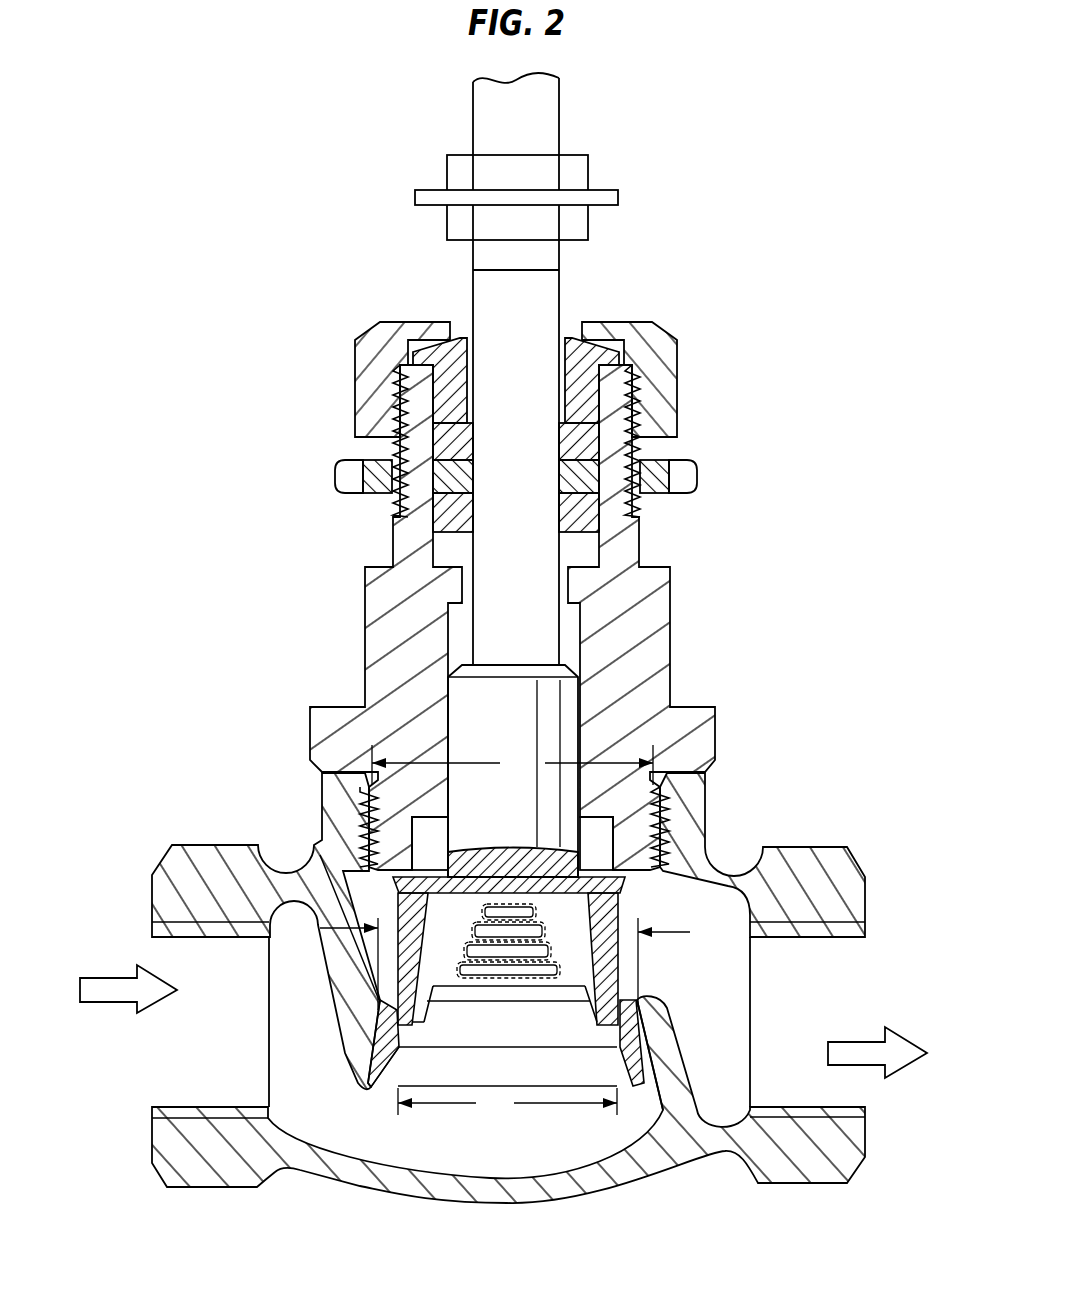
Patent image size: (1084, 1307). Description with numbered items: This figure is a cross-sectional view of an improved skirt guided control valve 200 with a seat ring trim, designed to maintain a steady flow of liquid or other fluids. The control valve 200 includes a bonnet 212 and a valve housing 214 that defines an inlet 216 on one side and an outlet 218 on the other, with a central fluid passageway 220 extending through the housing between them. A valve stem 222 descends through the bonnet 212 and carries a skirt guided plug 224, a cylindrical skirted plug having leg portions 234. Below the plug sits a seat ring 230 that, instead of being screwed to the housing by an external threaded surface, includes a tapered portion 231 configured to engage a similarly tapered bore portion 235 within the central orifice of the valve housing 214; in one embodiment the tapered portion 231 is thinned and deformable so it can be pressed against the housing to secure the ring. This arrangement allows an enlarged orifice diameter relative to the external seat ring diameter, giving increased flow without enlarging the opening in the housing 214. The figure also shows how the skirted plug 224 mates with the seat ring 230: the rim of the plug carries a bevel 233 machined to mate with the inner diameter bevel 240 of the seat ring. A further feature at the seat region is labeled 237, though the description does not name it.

The skirt guided control valve 200 is at (262, 475).
The bonnet 212 is at (697, 720).
The valve housing 214 is at (687, 803).
The inlet 216 is at (195, 1050).
The outlet 218 is at (815, 972).
The central fluid passageway 220 is at (735, 1021).
The valve stem 222 is at (523, 553).
The skirt guided plug 224 is at (443, 928).
The seat ring 230 is at (388, 1015).
The tapered portion 231 is at (388, 1082).
The bevel 233 is at (620, 886).
The leg portions 234 is at (600, 1002).
The tapered bore portion 235 is at (367, 1072).
The body seat surface 237 is at (638, 1078).
The inner diameter bevel 240 is at (628, 1003).